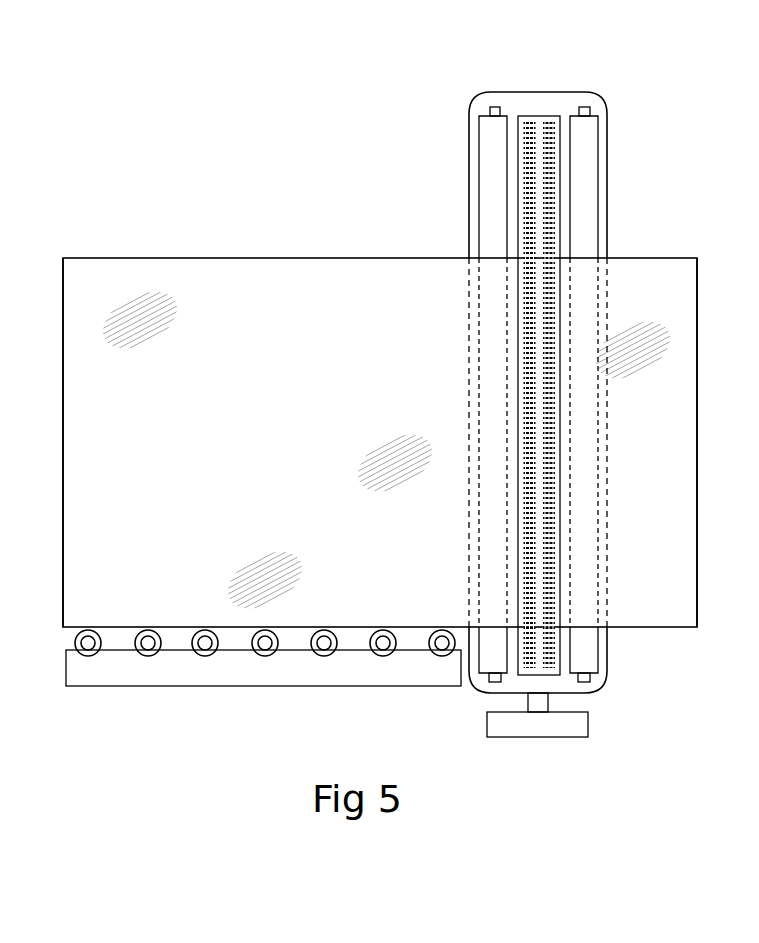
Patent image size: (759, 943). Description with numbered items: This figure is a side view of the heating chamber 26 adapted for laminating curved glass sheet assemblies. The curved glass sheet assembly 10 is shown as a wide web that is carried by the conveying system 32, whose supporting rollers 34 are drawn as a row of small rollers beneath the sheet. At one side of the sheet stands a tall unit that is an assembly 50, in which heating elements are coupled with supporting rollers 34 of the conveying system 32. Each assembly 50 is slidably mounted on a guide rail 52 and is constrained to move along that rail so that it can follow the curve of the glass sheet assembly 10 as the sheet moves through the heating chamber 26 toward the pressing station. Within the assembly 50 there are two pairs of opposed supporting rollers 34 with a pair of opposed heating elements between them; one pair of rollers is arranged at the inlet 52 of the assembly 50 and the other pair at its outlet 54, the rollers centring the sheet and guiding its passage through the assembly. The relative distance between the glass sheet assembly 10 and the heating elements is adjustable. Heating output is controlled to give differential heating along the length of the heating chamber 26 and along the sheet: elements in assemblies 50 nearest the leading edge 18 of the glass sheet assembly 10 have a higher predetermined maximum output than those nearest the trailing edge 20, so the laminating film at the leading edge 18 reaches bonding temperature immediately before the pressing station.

The glass sheet assembly 10 is at (263, 258).
The leading edge 18 is at (697, 258).
The trailing edge 20 is at (63, 258).
The heating chamber 26 is at (538, 117).
The conveying system 32 is at (148, 655).
The supporting rollers 34 is at (480, 145).
The assembly 50 is at (538, 702).
The guide rail 52 is at (470, 213).
The outlet 54 is at (607, 198).